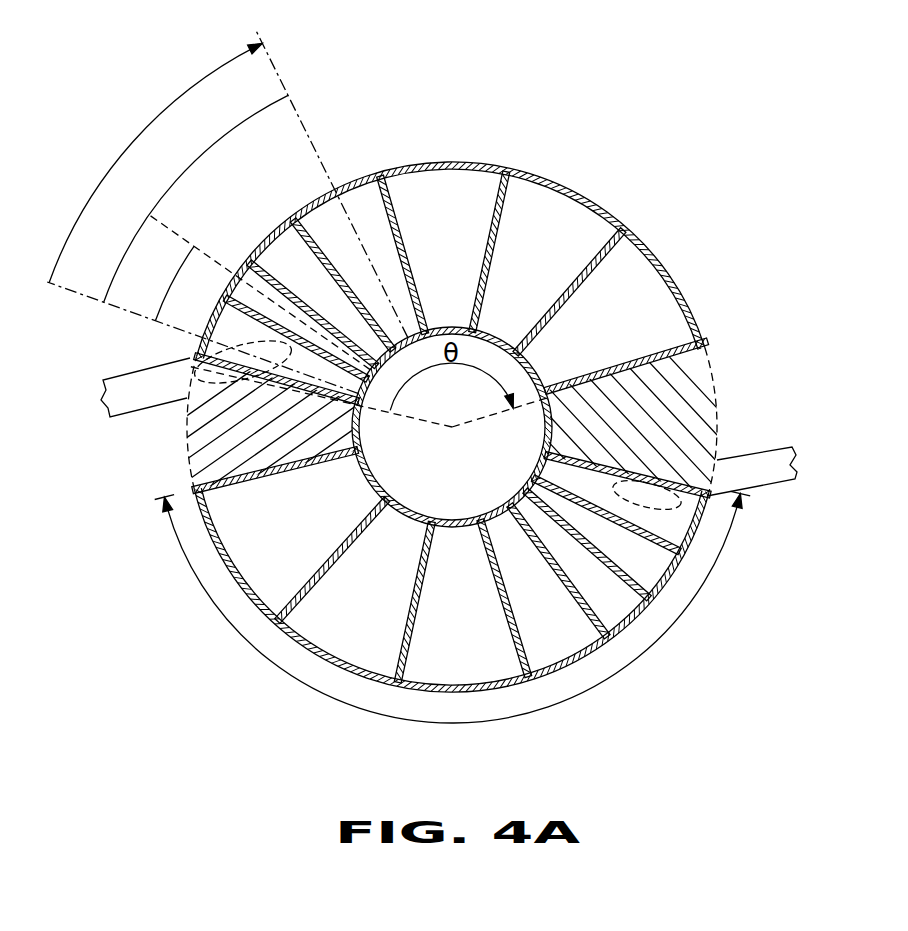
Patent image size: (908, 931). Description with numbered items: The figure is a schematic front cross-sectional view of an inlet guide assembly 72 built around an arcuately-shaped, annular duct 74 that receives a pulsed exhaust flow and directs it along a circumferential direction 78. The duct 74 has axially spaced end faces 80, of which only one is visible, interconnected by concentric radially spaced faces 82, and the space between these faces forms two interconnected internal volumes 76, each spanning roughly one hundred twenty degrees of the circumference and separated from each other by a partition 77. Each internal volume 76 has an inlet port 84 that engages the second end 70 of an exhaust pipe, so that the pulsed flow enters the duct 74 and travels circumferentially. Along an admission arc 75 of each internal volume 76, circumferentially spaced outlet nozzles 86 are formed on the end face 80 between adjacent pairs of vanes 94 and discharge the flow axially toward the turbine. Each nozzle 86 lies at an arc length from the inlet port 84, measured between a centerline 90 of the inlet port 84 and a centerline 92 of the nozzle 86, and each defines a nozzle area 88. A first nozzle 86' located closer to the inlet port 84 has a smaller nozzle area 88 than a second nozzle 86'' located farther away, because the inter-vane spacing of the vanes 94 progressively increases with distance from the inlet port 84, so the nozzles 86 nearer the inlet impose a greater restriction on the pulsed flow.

The second end 70 is at (133, 387).
The inlet guide assembly 72 is at (738, 195).
The duct 74 is at (345, 676).
The admission arc 75 is at (733, 537).
The internal volume 76 is at (563, 225).
The partition 77 is at (212, 448).
The circumferential direction 78 is at (127, 147).
The end face 80 is at (663, 313).
The radially spaced face 82 is at (360, 470).
The inlet port 84 is at (243, 383).
The outlet nozzle 86 is at (451, 478).
The first nozzle 86' is at (273, 330).
The second nozzle 86'' is at (392, 214).
The nozzle area 88 is at (343, 238).
The centerline of the inlet port 90 is at (183, 327).
The centerline of the nozzle 92 is at (233, 272).
The vane 94 is at (657, 592).